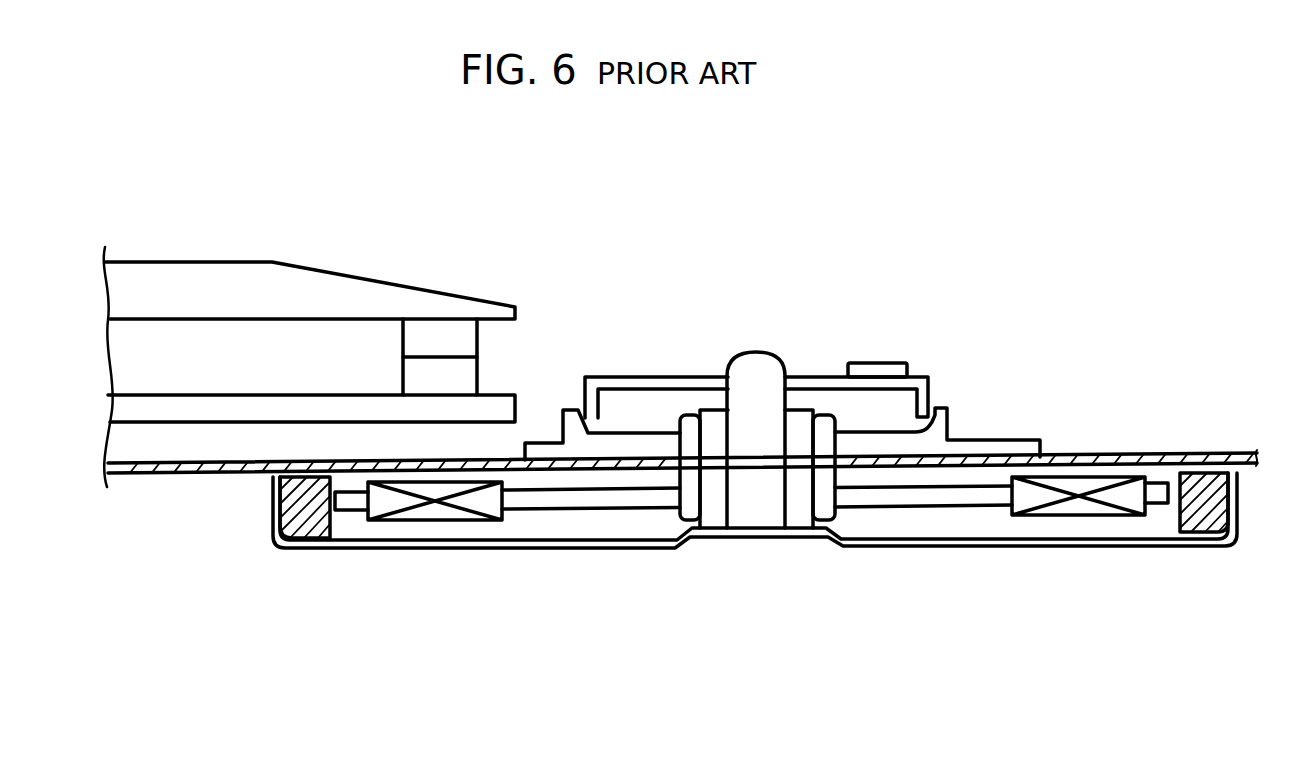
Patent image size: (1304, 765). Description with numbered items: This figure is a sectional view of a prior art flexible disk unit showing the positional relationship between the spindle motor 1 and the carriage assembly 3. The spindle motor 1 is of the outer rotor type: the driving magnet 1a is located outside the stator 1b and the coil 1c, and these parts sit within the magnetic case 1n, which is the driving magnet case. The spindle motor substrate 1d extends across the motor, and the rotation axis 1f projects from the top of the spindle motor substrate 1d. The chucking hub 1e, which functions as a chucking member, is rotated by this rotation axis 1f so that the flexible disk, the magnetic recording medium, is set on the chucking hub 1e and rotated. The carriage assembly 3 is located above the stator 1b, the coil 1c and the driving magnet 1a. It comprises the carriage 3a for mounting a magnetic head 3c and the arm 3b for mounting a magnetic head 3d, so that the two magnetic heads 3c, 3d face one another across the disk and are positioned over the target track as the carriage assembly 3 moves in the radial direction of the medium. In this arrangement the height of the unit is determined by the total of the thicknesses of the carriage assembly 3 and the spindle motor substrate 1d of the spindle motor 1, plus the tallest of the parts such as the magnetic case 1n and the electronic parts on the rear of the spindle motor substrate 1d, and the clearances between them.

The spindle motor 1 is at (942, 405).
The driving magnet 1a is at (1203, 527).
The stator 1b is at (910, 498).
The coil 1c is at (1080, 508).
The spindle motor substrate 1d is at (1103, 452).
The chucking hub 1e is at (684, 373).
The rotation axis 1f is at (765, 353).
The magnetic case 1n is at (395, 548).
The carriage assembly 3 is at (312, 362).
The carriage 3a is at (150, 417).
The arm 3b is at (300, 267).
The magnetic head 3c is at (462, 382).
The magnetic head 3d is at (453, 332).